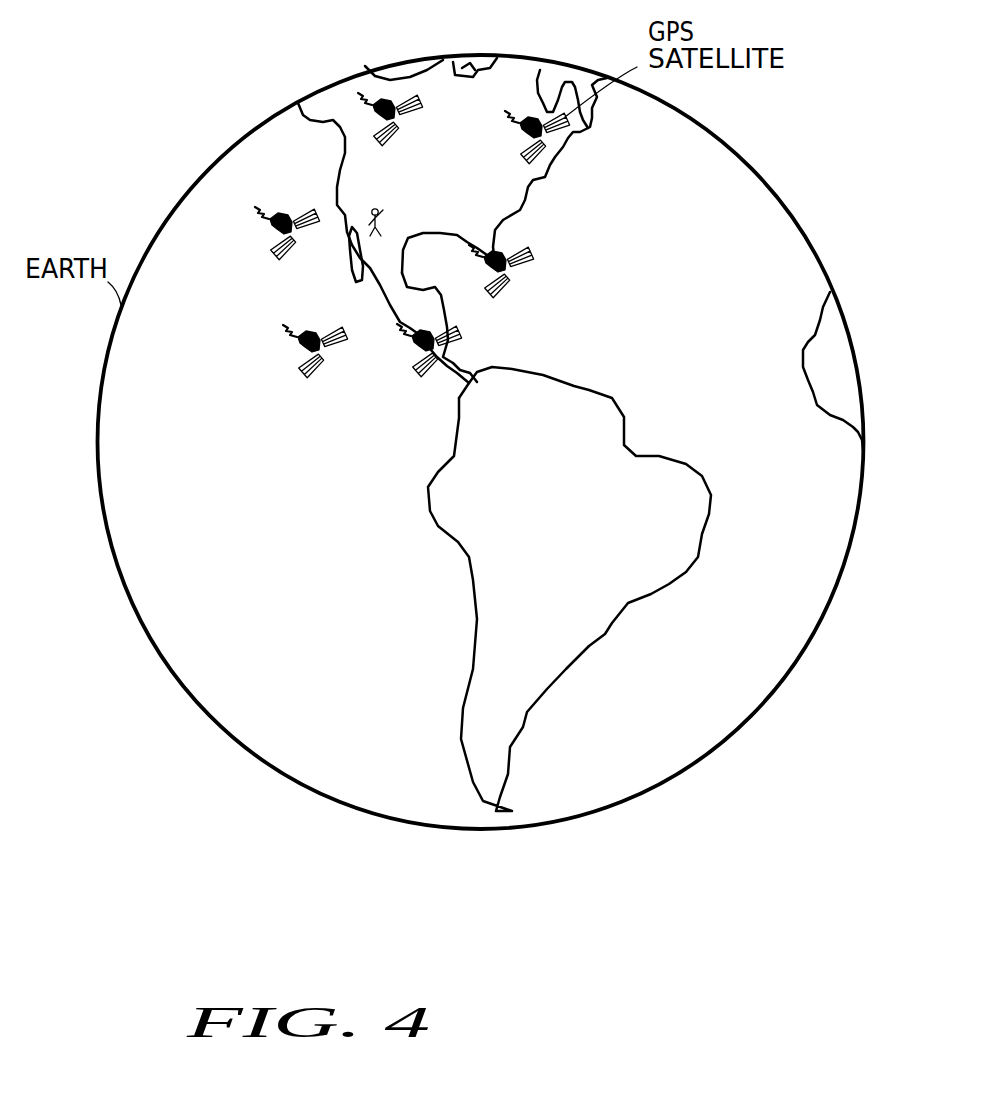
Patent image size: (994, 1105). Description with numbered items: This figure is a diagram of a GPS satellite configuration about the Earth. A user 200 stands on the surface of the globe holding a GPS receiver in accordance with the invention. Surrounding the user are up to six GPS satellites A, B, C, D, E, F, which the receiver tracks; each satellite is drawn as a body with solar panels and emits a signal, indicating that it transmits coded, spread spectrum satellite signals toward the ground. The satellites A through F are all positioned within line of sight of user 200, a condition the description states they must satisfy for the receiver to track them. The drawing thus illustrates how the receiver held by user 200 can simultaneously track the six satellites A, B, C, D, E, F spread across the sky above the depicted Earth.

The GPS satellite A is at (296, 376).
The GPS satellite B is at (266, 257).
The GPS satellite C is at (418, 100).
The GPS satellite D is at (521, 166).
The GPS satellite E is at (533, 256).
The GPS satellite F is at (417, 377).
The user 200 is at (394, 203).